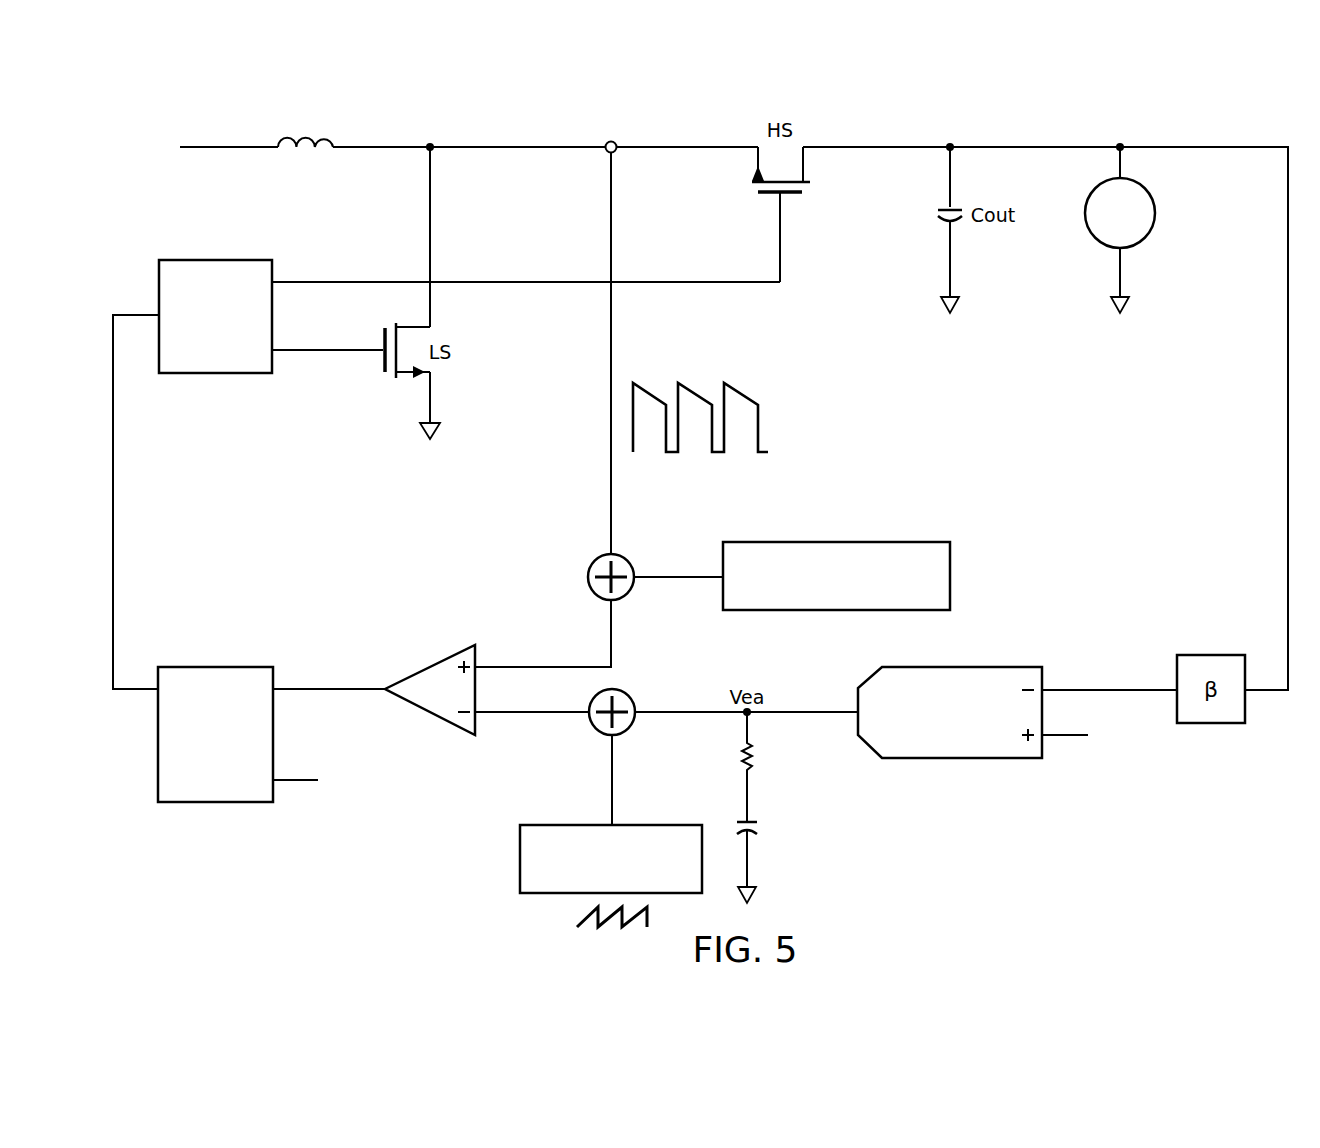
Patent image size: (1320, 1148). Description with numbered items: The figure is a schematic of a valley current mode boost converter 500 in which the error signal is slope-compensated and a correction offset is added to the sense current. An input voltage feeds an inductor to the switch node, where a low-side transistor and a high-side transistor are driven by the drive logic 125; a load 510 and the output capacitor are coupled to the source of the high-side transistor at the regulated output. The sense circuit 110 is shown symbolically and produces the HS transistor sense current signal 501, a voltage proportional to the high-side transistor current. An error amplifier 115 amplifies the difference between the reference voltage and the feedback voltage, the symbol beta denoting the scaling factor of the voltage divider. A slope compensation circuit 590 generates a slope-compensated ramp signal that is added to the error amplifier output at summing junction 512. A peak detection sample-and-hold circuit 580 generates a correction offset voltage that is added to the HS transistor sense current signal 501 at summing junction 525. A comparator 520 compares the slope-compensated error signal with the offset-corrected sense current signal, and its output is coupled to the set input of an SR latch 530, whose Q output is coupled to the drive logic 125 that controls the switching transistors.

The boost converter 500 is at (911, 112).
The sense circuit 110 is at (608, 141).
The HS transistor sense current signal 501 is at (609, 418).
The drive logic 125 is at (215, 260).
The load 510 is at (1156, 213).
The summing junction 525 is at (602, 598).
The peak detection sample-and-hold circuit 580 is at (837, 542).
The comparator 520 is at (433, 663).
The SR latch 530 is at (215, 802).
The summing junction 512 is at (603, 736).
The slope compensation circuit 590 is at (520, 859).
The error amplifier 115 is at (950, 758).